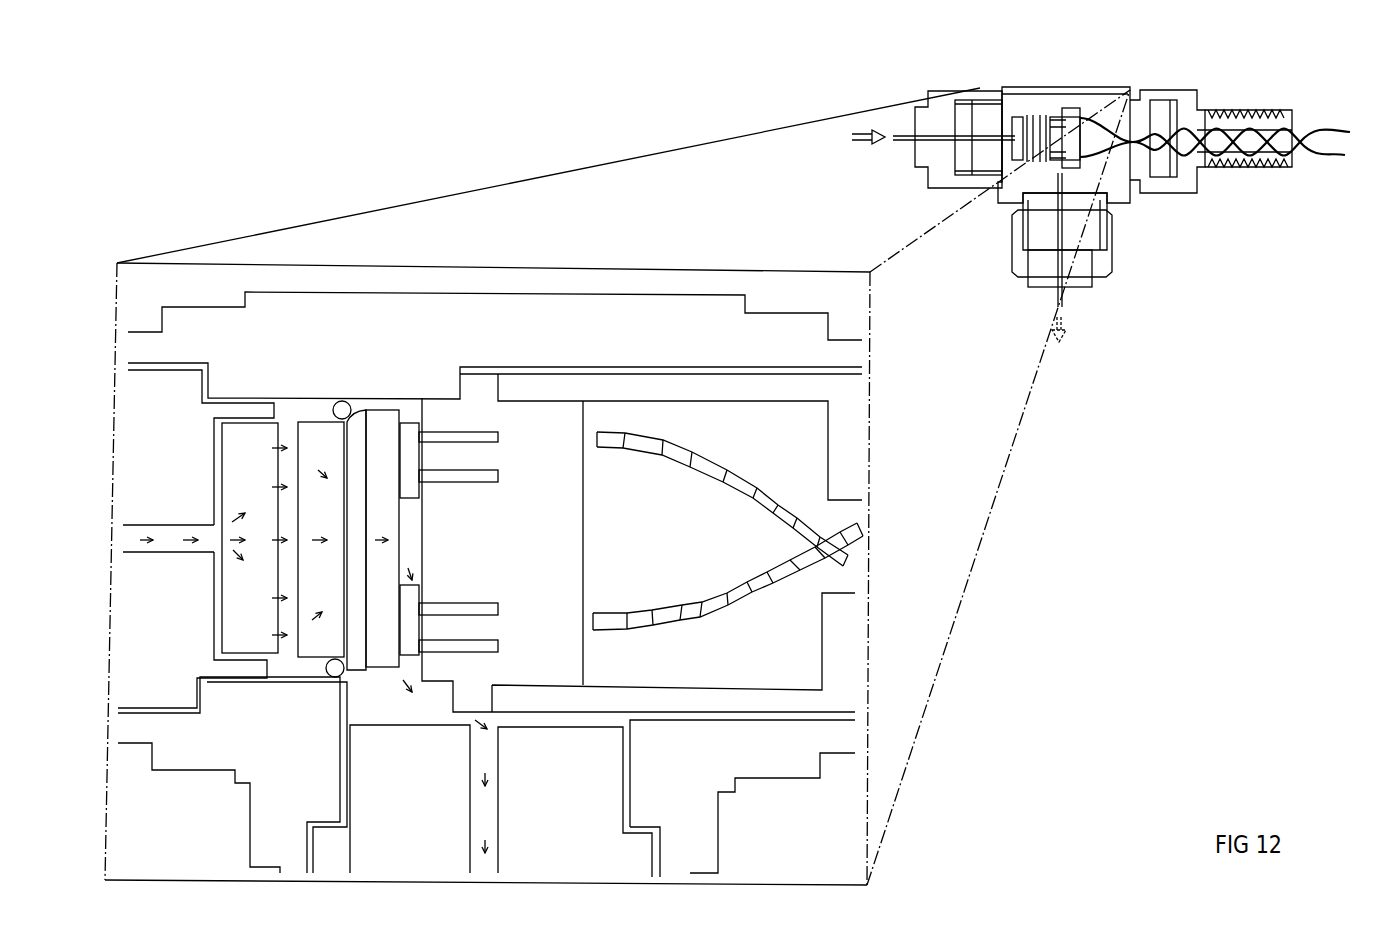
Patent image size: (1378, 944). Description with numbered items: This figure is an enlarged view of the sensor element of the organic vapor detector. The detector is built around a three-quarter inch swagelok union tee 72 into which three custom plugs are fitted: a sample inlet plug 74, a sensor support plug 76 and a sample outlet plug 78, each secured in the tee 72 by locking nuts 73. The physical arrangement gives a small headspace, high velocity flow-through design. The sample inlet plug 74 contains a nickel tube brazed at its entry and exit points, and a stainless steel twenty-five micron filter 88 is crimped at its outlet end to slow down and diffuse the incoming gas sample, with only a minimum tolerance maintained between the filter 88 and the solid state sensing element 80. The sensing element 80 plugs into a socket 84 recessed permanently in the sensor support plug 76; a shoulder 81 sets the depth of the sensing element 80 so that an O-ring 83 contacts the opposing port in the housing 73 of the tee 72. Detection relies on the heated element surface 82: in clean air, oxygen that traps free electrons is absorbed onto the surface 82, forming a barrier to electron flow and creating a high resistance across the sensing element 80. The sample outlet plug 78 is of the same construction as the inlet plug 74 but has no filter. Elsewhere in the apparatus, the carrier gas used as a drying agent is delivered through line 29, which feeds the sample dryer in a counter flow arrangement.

The locking nuts / housing 73 is at (245, 840).
The filter 88 is at (237, 433).
The heated element surface 82 is at (287, 435).
The O-ring 83 is at (345, 398).
The shoulder 81 is at (353, 665).
The solid state sensor element 80 is at (392, 415).
The socket 84 is at (487, 383).
The sample inlet plug 74 is at (923, 108).
The line 29 is at (915, 142).
The swagelok union tee 72 is at (997, 217).
The sensor support plug 76 is at (1233, 112).
The sample outlet plug 78 is at (1087, 277).